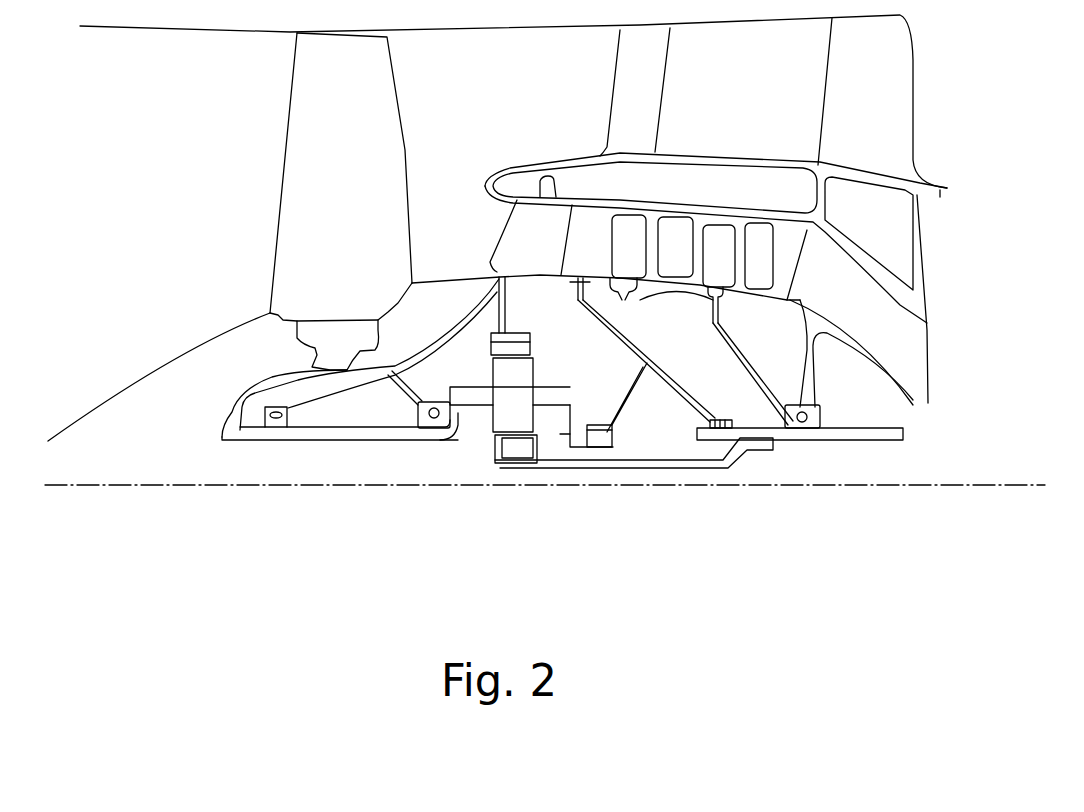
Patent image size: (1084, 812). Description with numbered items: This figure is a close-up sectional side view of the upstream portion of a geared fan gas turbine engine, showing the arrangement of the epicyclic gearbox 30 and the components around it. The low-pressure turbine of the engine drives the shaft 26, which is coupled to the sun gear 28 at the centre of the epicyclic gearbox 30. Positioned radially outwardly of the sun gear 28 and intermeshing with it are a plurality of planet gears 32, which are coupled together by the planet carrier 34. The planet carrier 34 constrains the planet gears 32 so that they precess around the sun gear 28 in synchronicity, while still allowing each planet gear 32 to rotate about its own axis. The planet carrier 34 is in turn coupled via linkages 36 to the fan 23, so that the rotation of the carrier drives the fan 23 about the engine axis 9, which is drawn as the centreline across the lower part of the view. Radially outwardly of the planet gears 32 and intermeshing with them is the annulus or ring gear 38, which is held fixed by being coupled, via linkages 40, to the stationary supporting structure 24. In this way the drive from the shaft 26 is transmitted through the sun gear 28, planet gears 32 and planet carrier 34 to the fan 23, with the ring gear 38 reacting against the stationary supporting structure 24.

The engine axis 9 is at (257, 487).
The fan 23 is at (300, 176).
The stationary supporting structure 24 is at (523, 235).
The shaft 26 is at (680, 467).
The sun gear 28 is at (517, 450).
The epicyclic gearbox 30 is at (458, 460).
The planet gears 32 is at (498, 420).
The planet carrier 34 is at (562, 434).
The linkages 36 is at (456, 459).
The ring gear 38 is at (490, 345).
The linkages 40 is at (507, 313).